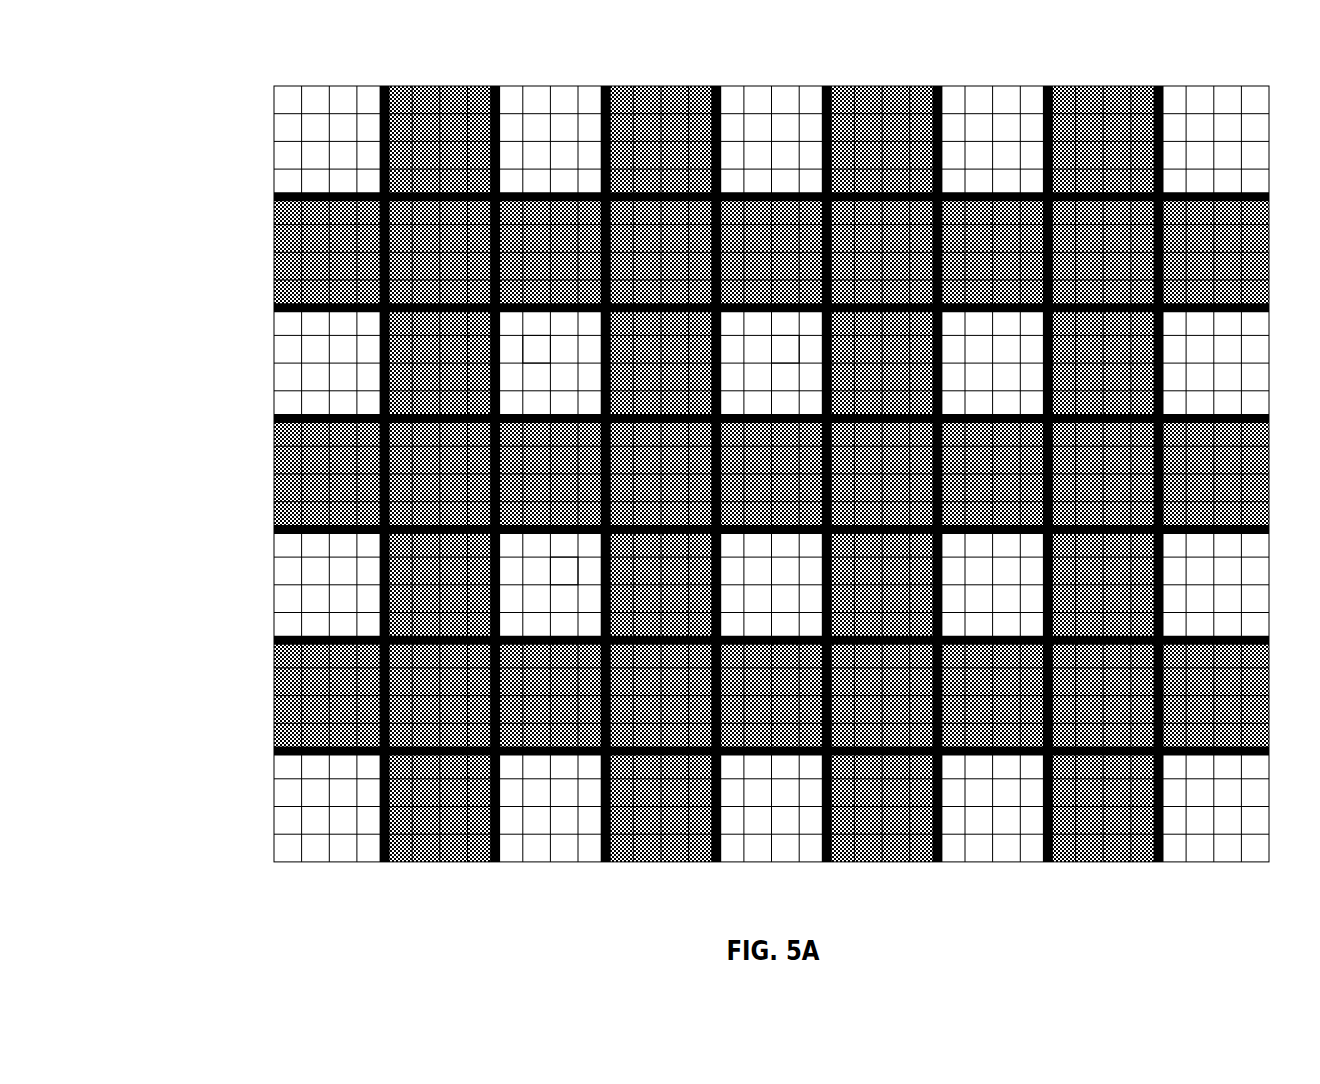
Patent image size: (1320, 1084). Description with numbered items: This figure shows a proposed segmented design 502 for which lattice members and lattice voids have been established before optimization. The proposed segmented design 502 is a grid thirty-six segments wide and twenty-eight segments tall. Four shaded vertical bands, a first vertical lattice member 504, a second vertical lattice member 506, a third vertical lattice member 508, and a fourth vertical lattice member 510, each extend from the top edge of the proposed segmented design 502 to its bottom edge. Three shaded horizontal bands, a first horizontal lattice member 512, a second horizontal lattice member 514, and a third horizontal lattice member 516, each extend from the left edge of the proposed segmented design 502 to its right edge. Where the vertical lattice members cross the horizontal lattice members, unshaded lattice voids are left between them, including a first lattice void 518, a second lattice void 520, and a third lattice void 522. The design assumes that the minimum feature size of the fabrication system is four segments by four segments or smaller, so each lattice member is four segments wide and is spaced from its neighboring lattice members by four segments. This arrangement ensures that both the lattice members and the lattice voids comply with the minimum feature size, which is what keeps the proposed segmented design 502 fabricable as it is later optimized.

The proposed segmented design 502 is at (700, 484).
The first vertical lattice member 504 is at (385, 83).
The second vertical lattice member 506 is at (606, 83).
The third vertical lattice member 508 is at (827, 83).
The fourth vertical lattice member 510 is at (1048, 83).
The first horizontal lattice member 512 is at (272, 196).
The second horizontal lattice member 514 is at (272, 418).
The third horizontal lattice member 516 is at (272, 640).
The first lattice void 518 is at (537, 346).
The second lattice void 520 is at (787, 346).
The third lattice void 522 is at (573, 572).